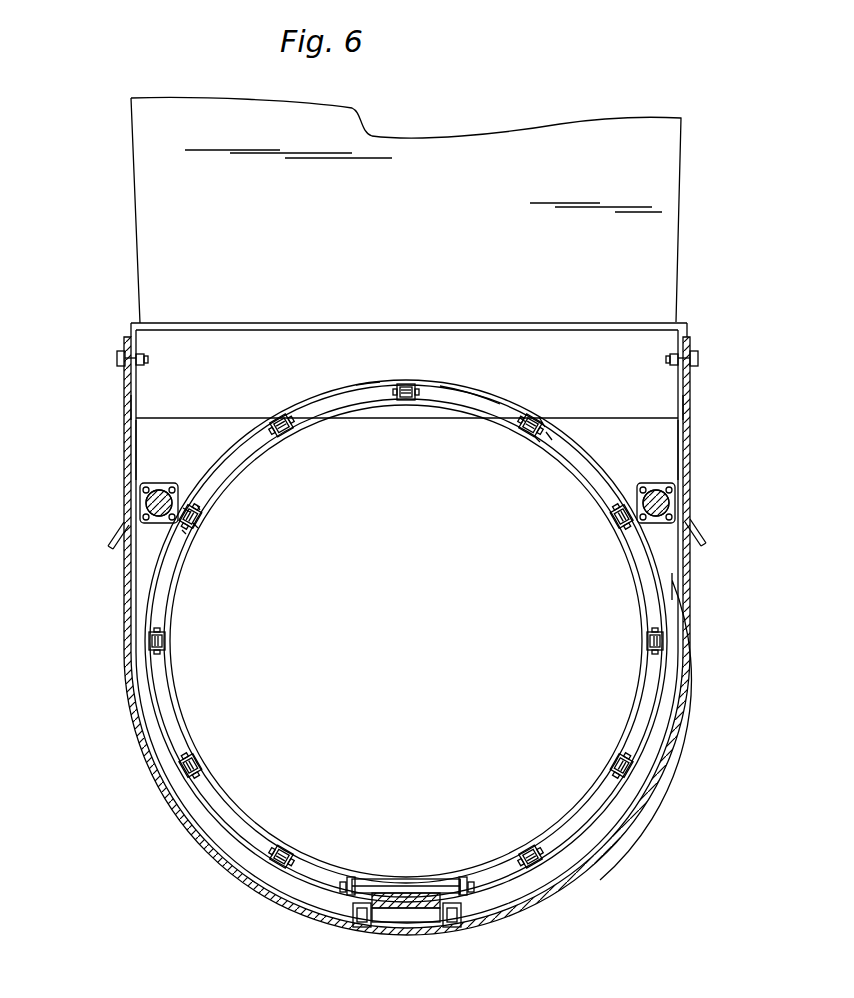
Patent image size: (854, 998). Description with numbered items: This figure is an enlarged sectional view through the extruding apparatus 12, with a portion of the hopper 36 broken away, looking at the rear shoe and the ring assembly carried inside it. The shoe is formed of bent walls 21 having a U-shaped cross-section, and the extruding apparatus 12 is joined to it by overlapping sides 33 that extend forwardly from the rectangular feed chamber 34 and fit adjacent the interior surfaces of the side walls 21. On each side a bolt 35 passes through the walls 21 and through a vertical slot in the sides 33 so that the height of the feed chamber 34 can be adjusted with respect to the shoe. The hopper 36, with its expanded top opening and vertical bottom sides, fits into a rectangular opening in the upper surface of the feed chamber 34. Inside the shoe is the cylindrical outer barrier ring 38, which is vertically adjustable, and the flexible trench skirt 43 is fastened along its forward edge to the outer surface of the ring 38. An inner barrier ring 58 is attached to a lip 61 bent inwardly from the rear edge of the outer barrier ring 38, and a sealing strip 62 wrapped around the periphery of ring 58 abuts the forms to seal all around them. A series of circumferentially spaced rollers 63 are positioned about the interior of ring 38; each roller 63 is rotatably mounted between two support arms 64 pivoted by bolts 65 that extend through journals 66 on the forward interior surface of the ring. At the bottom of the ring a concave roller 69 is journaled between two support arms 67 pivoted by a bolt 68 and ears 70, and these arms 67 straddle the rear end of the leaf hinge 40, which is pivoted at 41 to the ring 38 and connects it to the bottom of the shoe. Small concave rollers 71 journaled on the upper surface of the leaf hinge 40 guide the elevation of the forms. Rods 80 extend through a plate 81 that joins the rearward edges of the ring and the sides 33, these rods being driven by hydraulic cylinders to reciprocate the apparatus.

The extruding apparatus 12 is at (108, 309).
The walls 21 is at (124, 405).
The sides 33 is at (136, 410).
The feed chamber 34 is at (344, 364).
The bolt 35 is at (117, 359).
The hopper 36 is at (136, 188).
The outer barrier ring 38 is at (378, 384).
The leaf hinge 40 is at (432, 908).
The pivot 41 is at (452, 927).
The trench skirt 43 is at (678, 665).
The inner barrier ring 58 is at (470, 400).
The lip 61 is at (642, 570).
The sealing strip 62 is at (176, 594).
The rollers 63 is at (406, 404).
The support arms 64 is at (521, 420).
The bolts 65 is at (552, 437).
The journals 66 is at (536, 418).
The support arms 67 is at (352, 877).
The bolt 68 is at (466, 882).
The concave roller 69 is at (382, 880).
The ears 70 is at (343, 882).
The concave rollers 71 is at (364, 927).
The rods 80 is at (159, 497).
The plate 81 is at (184, 447).